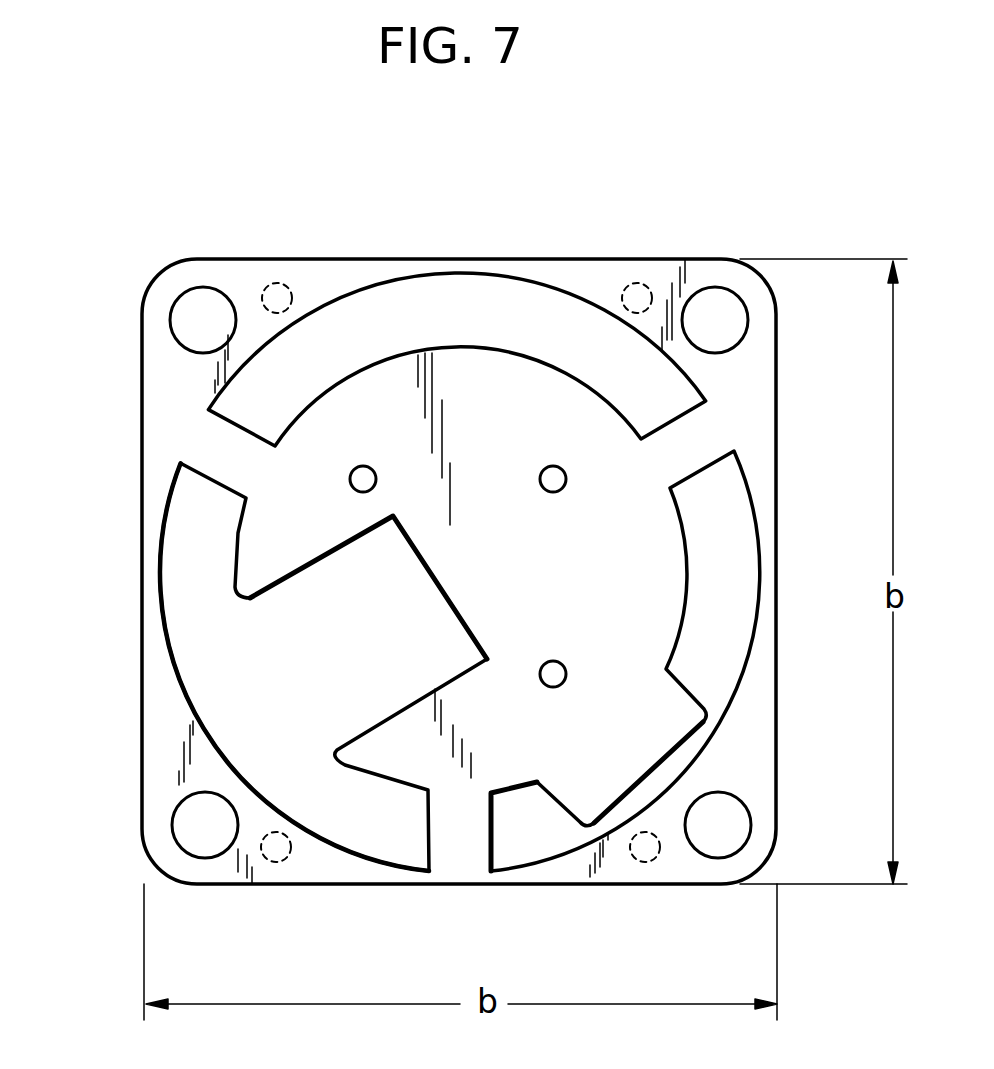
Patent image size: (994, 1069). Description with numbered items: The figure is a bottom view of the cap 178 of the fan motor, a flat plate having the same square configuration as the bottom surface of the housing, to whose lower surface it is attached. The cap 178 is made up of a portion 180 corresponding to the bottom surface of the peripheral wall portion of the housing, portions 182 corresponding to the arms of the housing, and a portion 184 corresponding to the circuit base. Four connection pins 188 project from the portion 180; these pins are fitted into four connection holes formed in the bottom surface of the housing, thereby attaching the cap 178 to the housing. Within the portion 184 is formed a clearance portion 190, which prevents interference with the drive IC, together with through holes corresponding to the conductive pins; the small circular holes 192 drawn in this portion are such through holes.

The cap 178 is at (138, 443).
The portion corresponding to the bottom surface of the peripheral wall portion 180 is at (750, 727).
The portions corresponding to the arms 182 is at (693, 463).
The portion corresponding to the circuit base 184 is at (496, 385).
The connection pins 188 is at (641, 284).
The clearance portion 190 is at (307, 567).
The bolt holes 192 is at (365, 466).